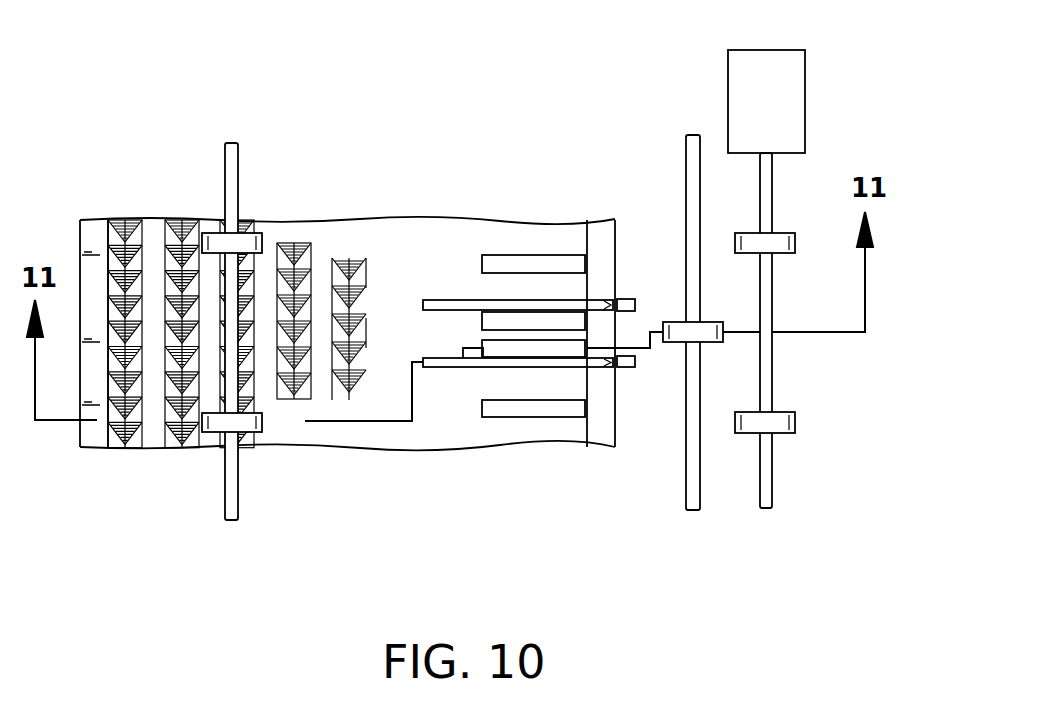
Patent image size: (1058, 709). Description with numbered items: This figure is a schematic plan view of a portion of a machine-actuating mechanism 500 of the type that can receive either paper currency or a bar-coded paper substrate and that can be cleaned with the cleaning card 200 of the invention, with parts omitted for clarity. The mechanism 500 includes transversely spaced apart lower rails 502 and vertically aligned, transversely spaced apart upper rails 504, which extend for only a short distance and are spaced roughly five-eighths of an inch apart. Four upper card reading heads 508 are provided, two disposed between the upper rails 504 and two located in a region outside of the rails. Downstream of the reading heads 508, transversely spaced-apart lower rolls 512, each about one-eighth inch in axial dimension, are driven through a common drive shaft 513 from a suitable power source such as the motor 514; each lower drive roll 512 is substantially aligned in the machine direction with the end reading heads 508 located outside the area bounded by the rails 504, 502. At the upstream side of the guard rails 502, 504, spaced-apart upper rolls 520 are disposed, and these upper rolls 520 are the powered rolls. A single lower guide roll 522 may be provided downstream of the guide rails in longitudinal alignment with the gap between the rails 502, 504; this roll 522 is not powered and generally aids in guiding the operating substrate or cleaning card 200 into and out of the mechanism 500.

The cleaning card 200 is at (93, 220).
The machine-actuating mechanism 500 is at (427, 118).
The lower rails 502 is at (629, 297).
The upper rails 504 is at (437, 302).
The upper card reading heads 508 is at (530, 262).
The lower rolls 512 is at (782, 232).
The drive shaft 513 is at (770, 490).
The motor 514 is at (795, 70).
The upper rolls 520 is at (244, 243).
The lower guide roll 522 is at (680, 341).